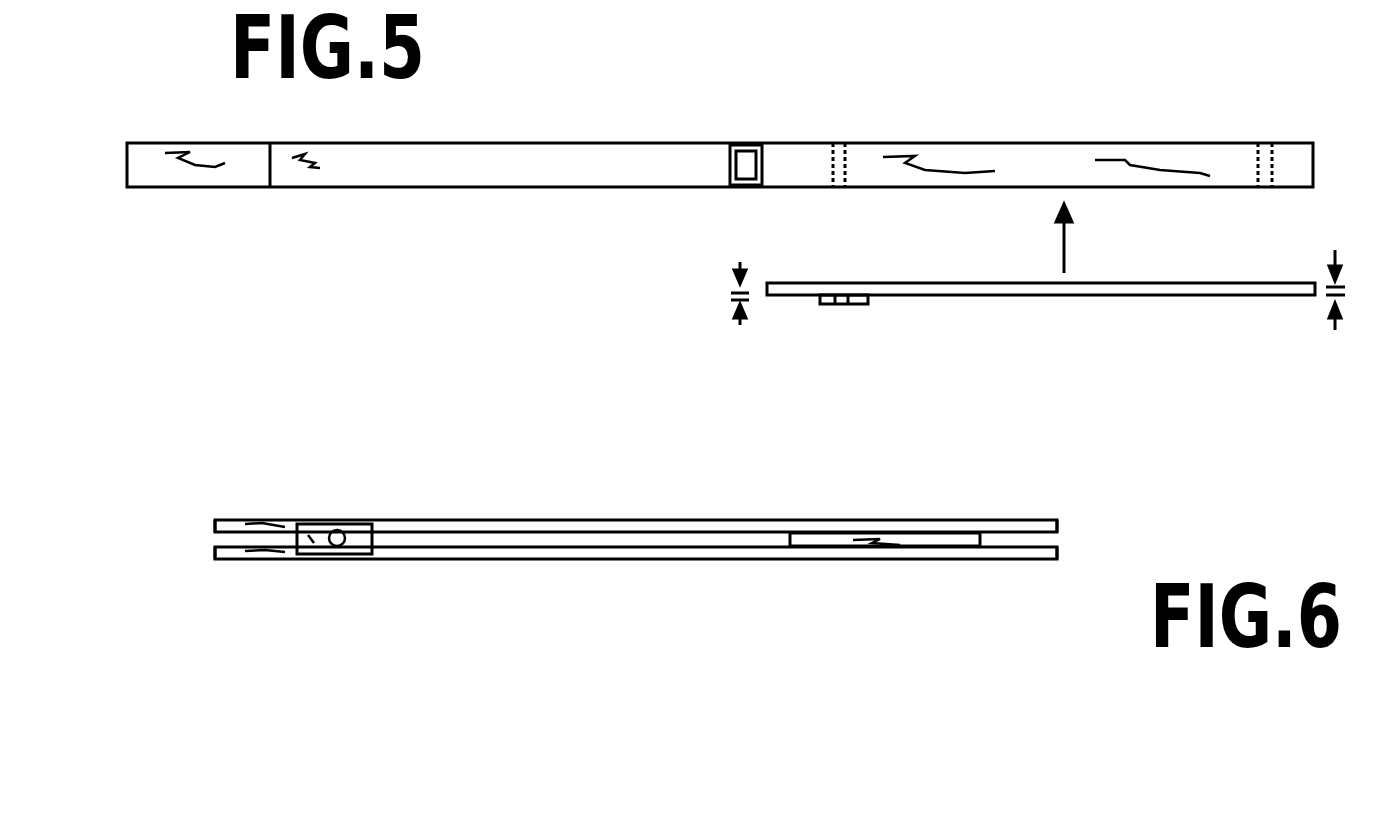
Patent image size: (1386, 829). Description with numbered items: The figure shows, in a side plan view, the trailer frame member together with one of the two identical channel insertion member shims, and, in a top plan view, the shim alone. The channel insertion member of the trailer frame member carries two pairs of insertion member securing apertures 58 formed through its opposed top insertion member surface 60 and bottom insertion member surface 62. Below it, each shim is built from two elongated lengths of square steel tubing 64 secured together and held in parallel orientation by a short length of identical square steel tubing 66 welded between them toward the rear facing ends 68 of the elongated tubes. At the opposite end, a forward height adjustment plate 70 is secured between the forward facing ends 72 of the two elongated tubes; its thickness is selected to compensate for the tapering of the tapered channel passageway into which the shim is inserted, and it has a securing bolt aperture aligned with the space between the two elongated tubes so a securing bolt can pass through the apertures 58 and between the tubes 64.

In FIG. 5, the insertion member securing apertures 58 is at (841, 170).
In FIG. 5, the top insertion member surface 60 is at (945, 143).
In FIG. 5, the bottom insertion member surface 62 is at (947, 187).
In FIG. 6, the elongated lengths of square steel tubing 64 is at (535, 520).
In FIG. 6, the short length of identical square steel tubing 66 is at (907, 533).
In FIG. 6, the rear facing ends 68 is at (1033, 532).
In FIG. 5, the forward height adjustment plate 70 is at (868, 304).
In FIG. 6, the forward height adjustment plate 70 is at (315, 539).
In FIG. 6, the forward facing ends 72 is at (288, 523).